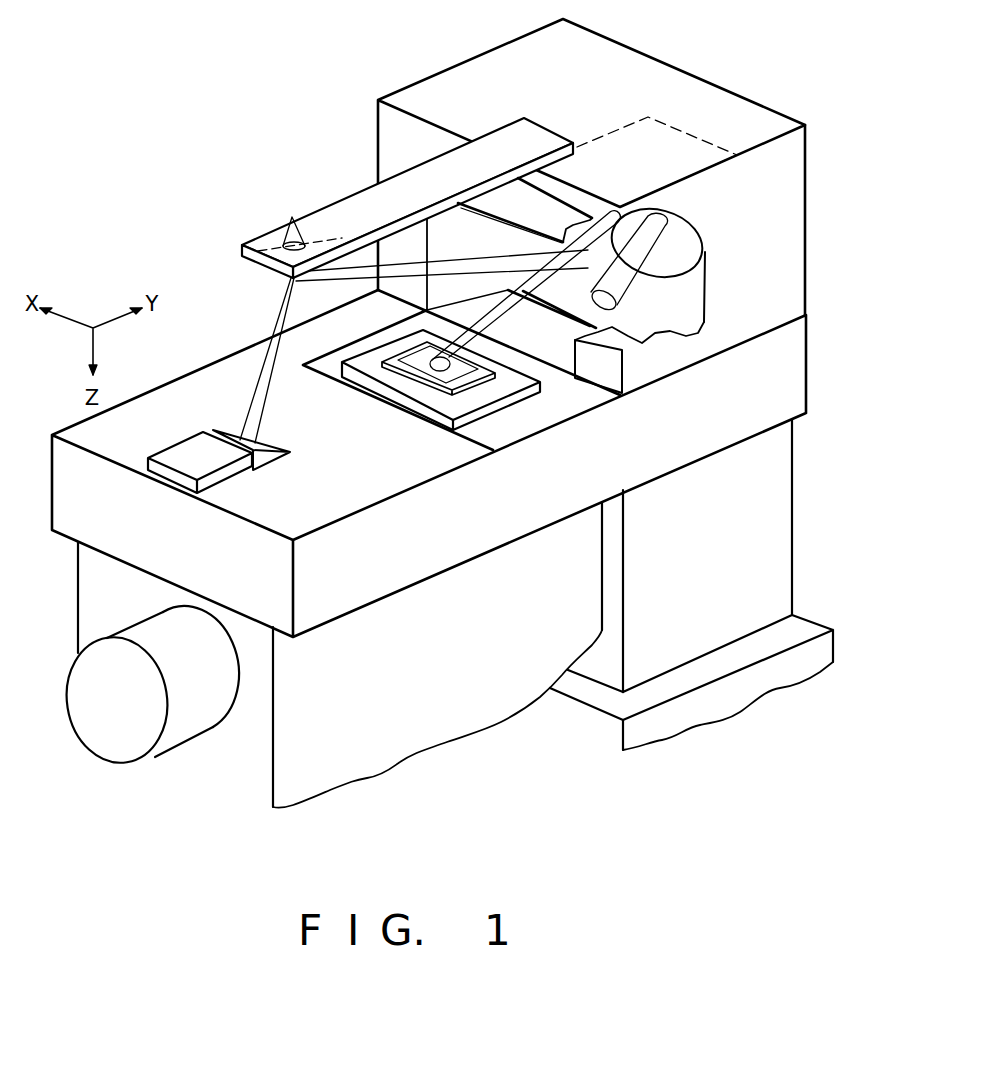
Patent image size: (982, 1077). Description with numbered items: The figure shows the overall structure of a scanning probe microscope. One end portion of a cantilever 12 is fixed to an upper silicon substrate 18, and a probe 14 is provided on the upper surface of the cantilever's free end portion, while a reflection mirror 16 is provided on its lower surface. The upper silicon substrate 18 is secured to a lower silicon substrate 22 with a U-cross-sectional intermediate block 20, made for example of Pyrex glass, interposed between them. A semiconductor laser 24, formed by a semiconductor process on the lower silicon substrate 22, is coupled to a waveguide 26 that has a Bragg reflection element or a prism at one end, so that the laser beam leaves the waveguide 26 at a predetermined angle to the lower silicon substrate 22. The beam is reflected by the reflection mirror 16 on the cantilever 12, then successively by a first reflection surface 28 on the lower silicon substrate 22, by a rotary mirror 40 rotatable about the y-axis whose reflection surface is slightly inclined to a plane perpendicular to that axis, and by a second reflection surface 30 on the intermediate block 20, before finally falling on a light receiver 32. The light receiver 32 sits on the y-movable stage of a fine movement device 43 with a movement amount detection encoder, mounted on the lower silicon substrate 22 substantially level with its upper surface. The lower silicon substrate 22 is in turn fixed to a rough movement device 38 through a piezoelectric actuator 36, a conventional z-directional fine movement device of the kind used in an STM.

The cantilever 12 is at (337, 200).
The probe 14 is at (289, 219).
The reflection mirror 16 is at (262, 262).
The upper silicon substrate 18 is at (483, 54).
The intermediate block 20 is at (800, 203).
The lower silicon substrate 22 is at (806, 340).
The semiconductor laser 24 is at (189, 450).
The waveguide 26 is at (272, 460).
The first reflection surface 28 is at (583, 318).
The second reflection surface 30 is at (694, 133).
The light receiver 32 is at (423, 378).
The piezoelectric actuator 36 is at (800, 560).
The rough movement device 38 is at (566, 718).
The rotary mirror 40 is at (664, 256).
The fine movement device 43 is at (411, 762).